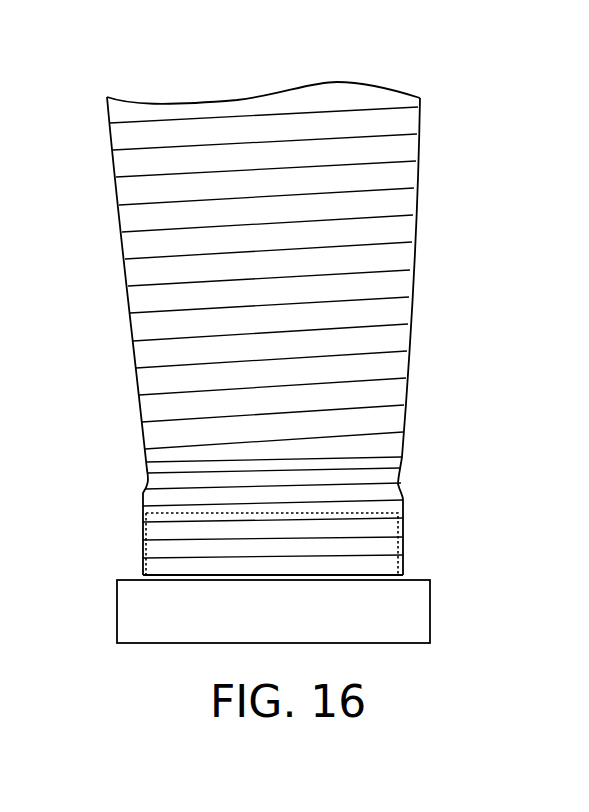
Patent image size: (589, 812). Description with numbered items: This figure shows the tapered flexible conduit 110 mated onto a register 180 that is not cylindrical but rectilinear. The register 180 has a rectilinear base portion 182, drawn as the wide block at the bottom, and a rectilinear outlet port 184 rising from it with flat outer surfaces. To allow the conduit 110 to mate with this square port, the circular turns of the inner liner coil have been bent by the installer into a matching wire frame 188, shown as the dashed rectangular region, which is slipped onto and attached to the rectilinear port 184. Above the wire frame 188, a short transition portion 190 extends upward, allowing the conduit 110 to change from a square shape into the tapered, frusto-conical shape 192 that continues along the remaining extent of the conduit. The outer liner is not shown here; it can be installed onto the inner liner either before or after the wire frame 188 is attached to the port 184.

The tapered flexible conduit 110 is at (140, 68).
The tapered, frusto-conical shape 192 is at (143, 222).
The transition portion 190 is at (142, 478).
The wire frame 188 is at (405, 527).
The rectilinear outlet port 184 is at (140, 550).
The register 180 is at (100, 612).
The rectilinear base portion 182 is at (147, 627).